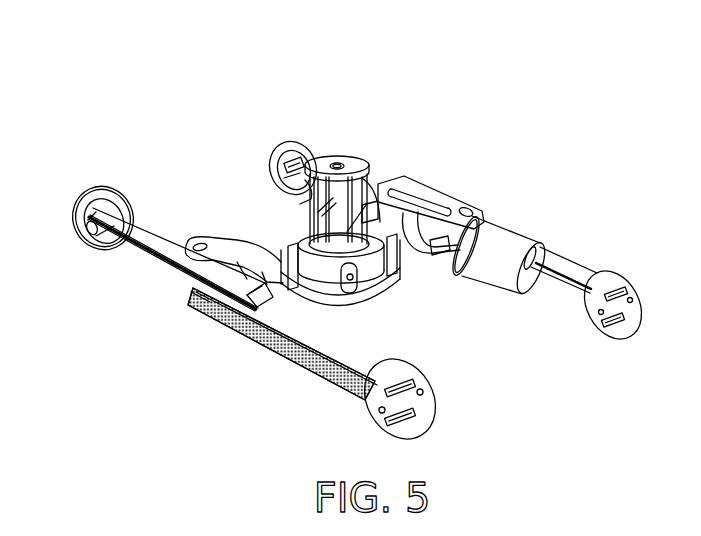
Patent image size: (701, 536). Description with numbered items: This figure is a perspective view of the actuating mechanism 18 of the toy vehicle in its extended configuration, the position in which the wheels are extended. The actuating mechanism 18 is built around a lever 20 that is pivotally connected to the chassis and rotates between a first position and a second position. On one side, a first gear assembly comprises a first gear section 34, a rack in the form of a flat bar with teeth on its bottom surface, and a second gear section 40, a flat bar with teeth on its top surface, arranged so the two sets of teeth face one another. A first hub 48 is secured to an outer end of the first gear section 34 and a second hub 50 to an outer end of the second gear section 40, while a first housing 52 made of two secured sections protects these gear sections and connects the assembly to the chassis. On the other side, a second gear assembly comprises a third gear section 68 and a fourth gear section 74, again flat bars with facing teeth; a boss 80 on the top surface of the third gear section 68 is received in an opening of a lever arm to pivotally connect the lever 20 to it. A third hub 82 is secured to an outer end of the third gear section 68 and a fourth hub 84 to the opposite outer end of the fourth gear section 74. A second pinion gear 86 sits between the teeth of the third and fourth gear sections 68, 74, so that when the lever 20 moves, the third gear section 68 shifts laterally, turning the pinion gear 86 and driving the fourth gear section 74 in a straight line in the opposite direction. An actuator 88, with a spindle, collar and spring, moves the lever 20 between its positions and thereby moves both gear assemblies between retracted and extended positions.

The actuating mechanism 18 is at (231, 99).
The lever 20 is at (393, 298).
The first gear section 34 is at (567, 262).
The second gear section 40 is at (293, 202).
The first hub 48 is at (617, 330).
The second hub 50 is at (306, 143).
The first housing 52 is at (419, 194).
The third gear section 68 is at (149, 228).
The fourth gear section 74 is at (288, 360).
The boss 80 is at (199, 239).
The third hub 82 is at (96, 193).
The fourth hub 84 is at (423, 410).
The second pinion gear 86 is at (207, 313).
The actuator 88 is at (370, 150).